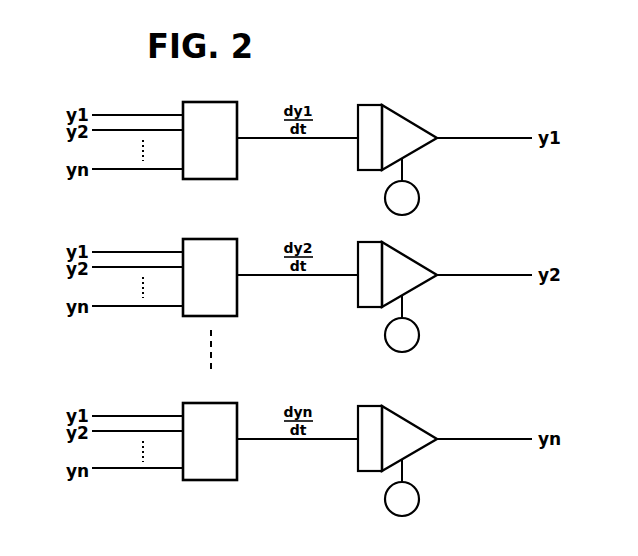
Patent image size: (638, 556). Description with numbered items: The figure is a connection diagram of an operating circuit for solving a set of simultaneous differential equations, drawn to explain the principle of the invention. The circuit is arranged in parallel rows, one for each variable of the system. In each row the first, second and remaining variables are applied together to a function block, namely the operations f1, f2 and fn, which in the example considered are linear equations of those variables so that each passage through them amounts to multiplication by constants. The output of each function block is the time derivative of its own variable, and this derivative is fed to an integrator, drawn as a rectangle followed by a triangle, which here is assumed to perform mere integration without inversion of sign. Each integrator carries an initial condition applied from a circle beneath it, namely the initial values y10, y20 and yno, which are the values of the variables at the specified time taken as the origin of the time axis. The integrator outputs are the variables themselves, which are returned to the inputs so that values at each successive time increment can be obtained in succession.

The operation f1 is at (210, 140).
The operation f2 is at (210, 277).
The operation fn is at (210, 441).
The initial value y10 is at (419, 199).
The initial value y20 is at (423, 335).
The initial value yn0 yno is at (423, 499).